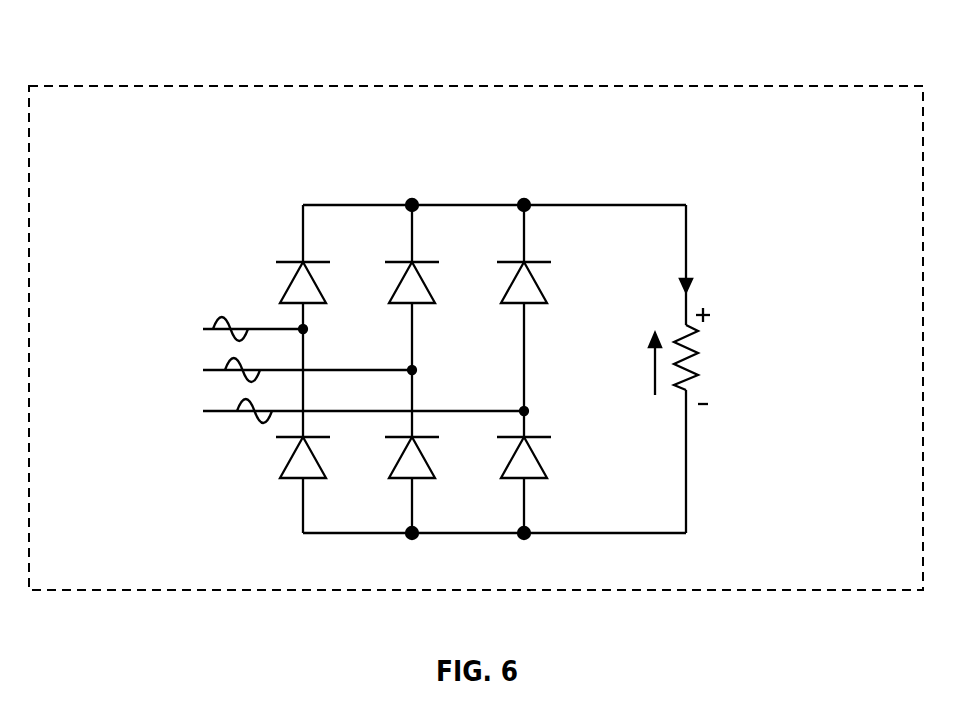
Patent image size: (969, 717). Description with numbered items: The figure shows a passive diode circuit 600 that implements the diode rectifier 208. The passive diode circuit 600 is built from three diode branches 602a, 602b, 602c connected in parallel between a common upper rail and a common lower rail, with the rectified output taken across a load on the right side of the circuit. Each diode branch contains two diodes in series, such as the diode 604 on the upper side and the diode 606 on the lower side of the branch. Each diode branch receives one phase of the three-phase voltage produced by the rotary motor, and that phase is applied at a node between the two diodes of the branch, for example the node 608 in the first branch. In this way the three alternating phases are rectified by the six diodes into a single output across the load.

The passive diode circuit 600 is at (108, 43).
The diode rectifier 208 is at (632, 80).
The diode branch 602a is at (261, 364).
The diode branch 602b is at (405, 227).
The diode branch 602c is at (527, 227).
The diode 604 is at (287, 284).
The diode 606 is at (283, 465).
The node 608 is at (298, 326).